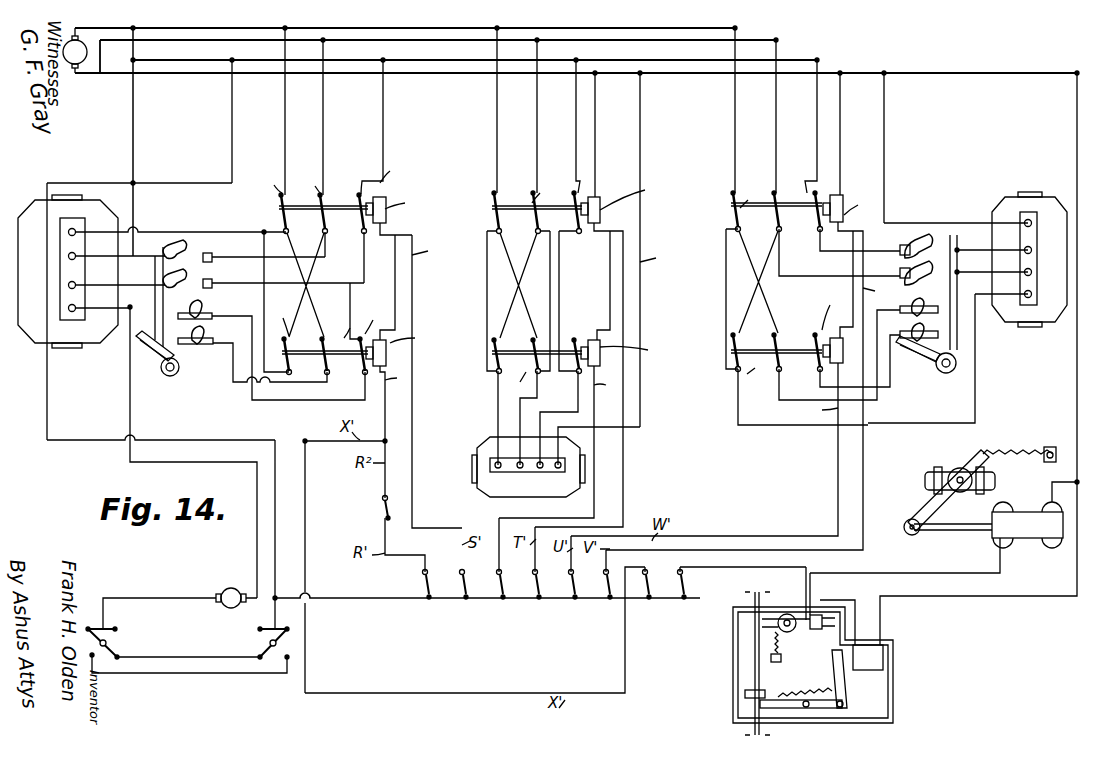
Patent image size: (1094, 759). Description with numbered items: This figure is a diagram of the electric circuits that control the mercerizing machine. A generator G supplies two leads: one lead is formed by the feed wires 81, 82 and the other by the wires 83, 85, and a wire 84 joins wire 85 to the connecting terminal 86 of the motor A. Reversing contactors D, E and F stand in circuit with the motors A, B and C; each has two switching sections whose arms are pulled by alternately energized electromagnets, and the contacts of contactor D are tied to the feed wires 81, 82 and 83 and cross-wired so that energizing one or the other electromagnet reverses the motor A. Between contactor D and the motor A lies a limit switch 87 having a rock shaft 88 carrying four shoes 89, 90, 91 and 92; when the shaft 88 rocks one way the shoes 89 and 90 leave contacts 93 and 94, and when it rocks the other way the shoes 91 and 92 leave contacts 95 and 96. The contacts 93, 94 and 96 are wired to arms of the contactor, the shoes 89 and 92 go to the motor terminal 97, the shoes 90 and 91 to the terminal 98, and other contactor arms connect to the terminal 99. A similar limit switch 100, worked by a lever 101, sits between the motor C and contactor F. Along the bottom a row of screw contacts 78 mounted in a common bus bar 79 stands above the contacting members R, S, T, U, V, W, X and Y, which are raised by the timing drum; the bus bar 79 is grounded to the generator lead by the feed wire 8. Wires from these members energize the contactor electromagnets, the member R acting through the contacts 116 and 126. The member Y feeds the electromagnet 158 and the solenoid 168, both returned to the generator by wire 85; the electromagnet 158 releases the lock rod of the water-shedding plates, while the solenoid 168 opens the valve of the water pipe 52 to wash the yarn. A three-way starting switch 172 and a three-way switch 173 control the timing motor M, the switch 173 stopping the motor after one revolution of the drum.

The feed wire 81 is at (236, 28).
The feed wire 82 is at (238, 43).
The wire of second generator lead 83 is at (438, 62).
The wire 84 is at (133, 125).
The wire of second generator lead 85 is at (433, 75).
The connecting terminal 86 is at (60, 311).
The limit switch 87 is at (178, 364).
The rock shaft 88 is at (170, 376).
The shoe 89 is at (177, 245).
The shoe 90 is at (190, 275).
The shoe 91 is at (192, 311).
The shoe 92 is at (205, 335).
The contact 93 is at (212, 255).
The contact 94 is at (212, 288).
The contact 95 is at (222, 312).
The contact 96 is at (222, 375).
The contacting terminal 97 is at (70, 257).
The contacting terminal 98 is at (70, 285).
The connecting terminal 99 is at (60, 233).
The limit switch 100 is at (928, 311).
The lever 101 is at (897, 360).
The water pipe 52 is at (991, 481).
The solenoid 168 is at (1020, 542).
The electromagnet 158 is at (883, 658).
The contact 116 is at (384, 502).
The contact 126 is at (385, 528).
The contacts 78 is at (488, 593).
The electric contact bus bar 79 is at (470, 600).
The bus conductor 8 is at (345, 600).
The three-way starting switch 172 is at (262, 643).
The three-way switch 173 is at (187, 650).